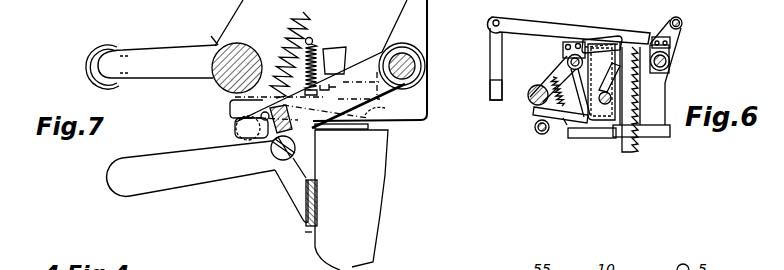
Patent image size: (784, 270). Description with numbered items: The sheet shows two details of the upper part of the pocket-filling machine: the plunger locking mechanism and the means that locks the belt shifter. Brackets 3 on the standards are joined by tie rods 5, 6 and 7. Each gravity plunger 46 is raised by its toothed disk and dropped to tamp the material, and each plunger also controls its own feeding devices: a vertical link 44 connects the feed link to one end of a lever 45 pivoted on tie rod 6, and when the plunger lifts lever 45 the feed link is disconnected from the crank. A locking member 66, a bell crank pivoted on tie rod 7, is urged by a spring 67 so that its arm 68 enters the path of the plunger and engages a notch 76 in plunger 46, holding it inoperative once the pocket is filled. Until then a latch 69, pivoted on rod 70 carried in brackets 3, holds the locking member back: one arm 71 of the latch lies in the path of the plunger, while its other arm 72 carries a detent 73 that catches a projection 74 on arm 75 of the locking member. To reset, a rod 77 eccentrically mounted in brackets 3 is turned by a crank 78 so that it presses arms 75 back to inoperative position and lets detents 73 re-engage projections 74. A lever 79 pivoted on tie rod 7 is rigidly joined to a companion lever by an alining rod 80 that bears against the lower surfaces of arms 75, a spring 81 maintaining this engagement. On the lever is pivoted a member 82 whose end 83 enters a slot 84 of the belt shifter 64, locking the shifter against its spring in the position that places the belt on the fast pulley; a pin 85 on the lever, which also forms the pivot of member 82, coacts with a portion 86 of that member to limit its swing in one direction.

In FIG. 7, the bracket 3 is at (258, 9).
In FIG. 6, the bracket 3 is at (658, 106).
In FIG. 6, the tie rod 5 is at (683, 24).
In FIG. 6, the tie rod 6 is at (669, 63).
In FIG. 7, the tie rod 7 is at (380, 60).
In FIG. 6, the vertical link 44 is at (490, 88).
In FIG. 6, the lever 45 is at (542, 30).
In FIG. 6, the plunger 46 is at (638, 106).
In FIG. 7, the belt shifter 64 is at (303, 246).
In FIG. 7, the locking member 66 is at (369, 137).
In FIG. 7, the spring 67 is at (300, 52).
In FIG. 6, the spring 67 is at (535, 105).
In FIG. 7, the arm 68 is at (344, 64).
In FIG. 6, the arm 68 is at (604, 83).
In FIG. 6, the latch 69 is at (555, 69).
In FIG. 6, the rod 70 is at (560, 86).
In FIG. 6, the arm 71 is at (593, 42).
In FIG. 7, the arm 72 is at (346, 54).
In FIG. 7, the detent 73 is at (361, 85).
In FIG. 6, the detent 73 is at (593, 138).
In FIG. 7, the projection 74 is at (327, 98).
In FIG. 6, the projection 74 is at (563, 122).
In FIG. 7, the arm 75 is at (228, 114).
In FIG. 6, the arm 75 is at (536, 116).
In FIG. 6, the notch 76 is at (666, 78).
In FIG. 7, the rod 77 is at (207, 32).
In FIG. 6, the rod 77 is at (528, 88).
In FIG. 7, the crank 78 is at (151, 74).
In FIG. 7, the lever 79 is at (318, 111).
In FIG. 7, the alining rod 80 is at (247, 123).
In FIG. 6, the alining rod 80 is at (534, 138).
In FIG. 7, the spring 81 is at (322, 62).
In FIG. 7, the member 82 is at (191, 168).
In FIG. 7, the end 83 is at (289, 190).
In FIG. 7, the slot 84 is at (289, 203).
In FIG. 7, the pin 85 is at (269, 115).
In FIG. 7, the portion 86 is at (318, 132).